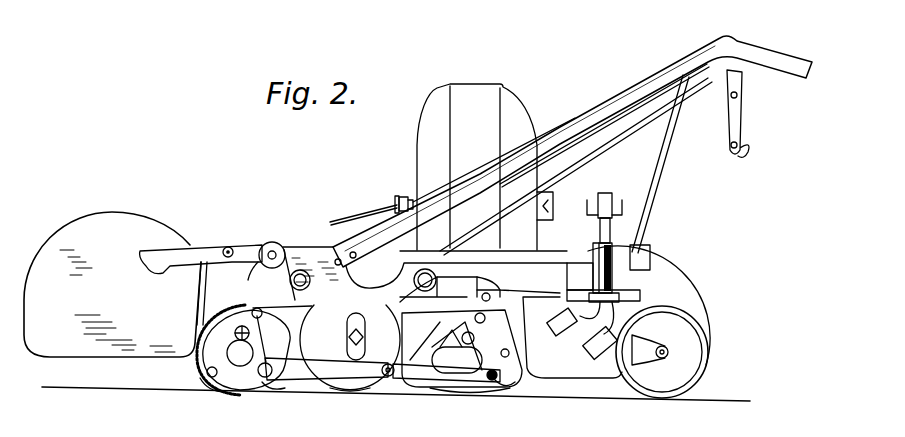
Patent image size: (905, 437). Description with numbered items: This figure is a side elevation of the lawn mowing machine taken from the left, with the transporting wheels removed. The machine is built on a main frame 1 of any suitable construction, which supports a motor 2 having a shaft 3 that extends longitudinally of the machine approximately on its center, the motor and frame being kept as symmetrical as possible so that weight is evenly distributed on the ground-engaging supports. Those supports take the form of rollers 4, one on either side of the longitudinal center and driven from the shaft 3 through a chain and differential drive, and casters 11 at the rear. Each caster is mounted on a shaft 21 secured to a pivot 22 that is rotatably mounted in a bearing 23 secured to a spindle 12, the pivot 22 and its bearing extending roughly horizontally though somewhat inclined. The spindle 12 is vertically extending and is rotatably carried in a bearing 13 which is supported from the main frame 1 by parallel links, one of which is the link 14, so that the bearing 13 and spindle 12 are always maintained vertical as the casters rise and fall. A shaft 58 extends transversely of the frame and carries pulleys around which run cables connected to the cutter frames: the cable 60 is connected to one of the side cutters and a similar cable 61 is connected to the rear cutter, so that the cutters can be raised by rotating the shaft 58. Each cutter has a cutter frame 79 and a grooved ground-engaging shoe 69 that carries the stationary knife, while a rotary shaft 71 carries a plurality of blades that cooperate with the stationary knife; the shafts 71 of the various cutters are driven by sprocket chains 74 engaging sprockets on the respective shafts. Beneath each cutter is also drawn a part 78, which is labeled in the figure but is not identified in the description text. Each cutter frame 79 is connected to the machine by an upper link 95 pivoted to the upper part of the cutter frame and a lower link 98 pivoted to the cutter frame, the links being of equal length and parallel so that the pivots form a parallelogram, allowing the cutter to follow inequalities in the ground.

The main frame 1 is at (332, 247).
The motor 2 is at (425, 142).
The shaft 3 is at (398, 202).
The rollers 4 is at (357, 390).
The casters 11 is at (708, 343).
The spindle 12 is at (603, 243).
The bearing 13 is at (597, 262).
The link 14 is at (641, 240).
The shaft 21 is at (668, 352).
The pivot 22 is at (597, 342).
The bearing 23 is at (570, 328).
The shaft 58 is at (272, 242).
The cable 60 is at (246, 278).
The cable 61 is at (485, 294).
The ground-engaging shoe 69 is at (279, 390).
The rotary shaft 71 is at (243, 364).
The sprocket chains 74 is at (430, 345).
The drive band 78 is at (212, 388).
The cutter frame 79 is at (200, 362).
The link 95 is at (282, 309).
The link 98 is at (320, 378).